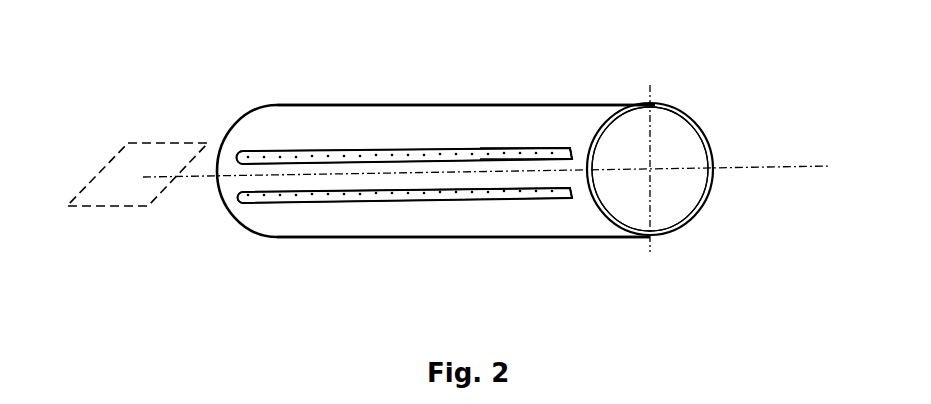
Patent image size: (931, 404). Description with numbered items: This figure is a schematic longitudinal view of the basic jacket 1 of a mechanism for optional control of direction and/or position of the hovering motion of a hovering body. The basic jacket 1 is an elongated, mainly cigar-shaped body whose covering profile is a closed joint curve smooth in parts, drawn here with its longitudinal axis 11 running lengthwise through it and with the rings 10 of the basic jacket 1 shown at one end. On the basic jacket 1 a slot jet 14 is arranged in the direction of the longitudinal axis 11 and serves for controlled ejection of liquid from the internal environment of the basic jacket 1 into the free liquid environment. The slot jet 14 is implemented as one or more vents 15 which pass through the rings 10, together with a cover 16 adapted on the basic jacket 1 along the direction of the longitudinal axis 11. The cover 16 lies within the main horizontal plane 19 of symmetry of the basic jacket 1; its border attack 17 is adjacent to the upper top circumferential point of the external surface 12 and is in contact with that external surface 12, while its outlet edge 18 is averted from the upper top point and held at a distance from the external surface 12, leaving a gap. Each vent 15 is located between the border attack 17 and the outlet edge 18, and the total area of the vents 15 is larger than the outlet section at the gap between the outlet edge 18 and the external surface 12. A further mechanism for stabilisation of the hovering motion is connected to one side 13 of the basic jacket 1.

The basic jacket 1 is at (537, 102).
The rings 10 is at (650, 100).
The longitudinal axis 11 is at (737, 167).
The external surface 12 is at (407, 105).
The side 13 is at (673, 140).
The slot jet 14 is at (308, 148).
The vents 15 is at (343, 155).
The cover 16 is at (462, 153).
The border attack 17 is at (507, 153).
The outlet edge 18 is at (548, 148).
The main horizontal plane of symmetry 19 is at (113, 195).